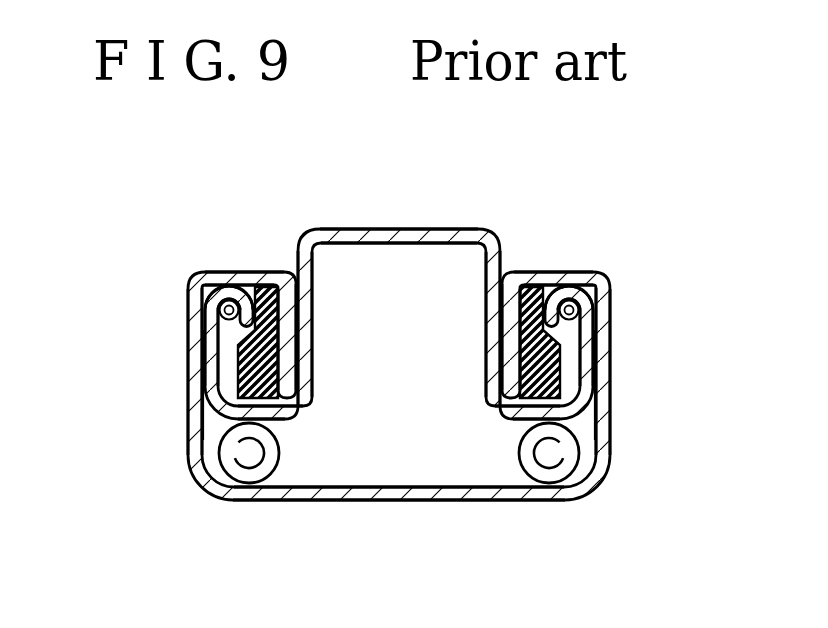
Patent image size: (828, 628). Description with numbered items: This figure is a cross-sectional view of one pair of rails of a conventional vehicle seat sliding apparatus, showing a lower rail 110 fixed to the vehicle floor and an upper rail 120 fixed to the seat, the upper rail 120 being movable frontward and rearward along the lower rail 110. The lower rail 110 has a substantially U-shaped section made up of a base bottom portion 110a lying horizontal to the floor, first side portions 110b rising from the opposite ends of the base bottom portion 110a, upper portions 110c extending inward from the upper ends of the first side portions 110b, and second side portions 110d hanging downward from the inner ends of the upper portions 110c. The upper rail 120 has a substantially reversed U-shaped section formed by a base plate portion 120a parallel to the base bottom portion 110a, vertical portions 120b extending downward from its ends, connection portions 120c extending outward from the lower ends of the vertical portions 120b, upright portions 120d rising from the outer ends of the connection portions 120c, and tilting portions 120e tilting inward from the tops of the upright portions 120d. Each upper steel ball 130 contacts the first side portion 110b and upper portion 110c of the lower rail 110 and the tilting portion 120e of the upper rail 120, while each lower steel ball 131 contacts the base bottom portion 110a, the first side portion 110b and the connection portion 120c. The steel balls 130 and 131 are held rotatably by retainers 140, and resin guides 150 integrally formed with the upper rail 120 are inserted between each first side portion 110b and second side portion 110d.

The lower rail 110 is at (447, 508).
The base bottom portion 110a is at (367, 502).
The first side portion 110b is at (200, 362).
The upper portion 110c is at (230, 277).
The second side portion 110d is at (284, 325).
The upper rail 120 is at (443, 218).
The base plate portion 120a is at (384, 238).
The vertical portion 120b is at (306, 351).
The connection portion 120c is at (272, 407).
The upright portion 120d is at (230, 378).
The tilting portion 120e is at (208, 321).
The steel ball 130 is at (220, 308).
The steel ball 131 is at (243, 457).
The retainer 140 is at (232, 400).
The guide 150 is at (255, 286).